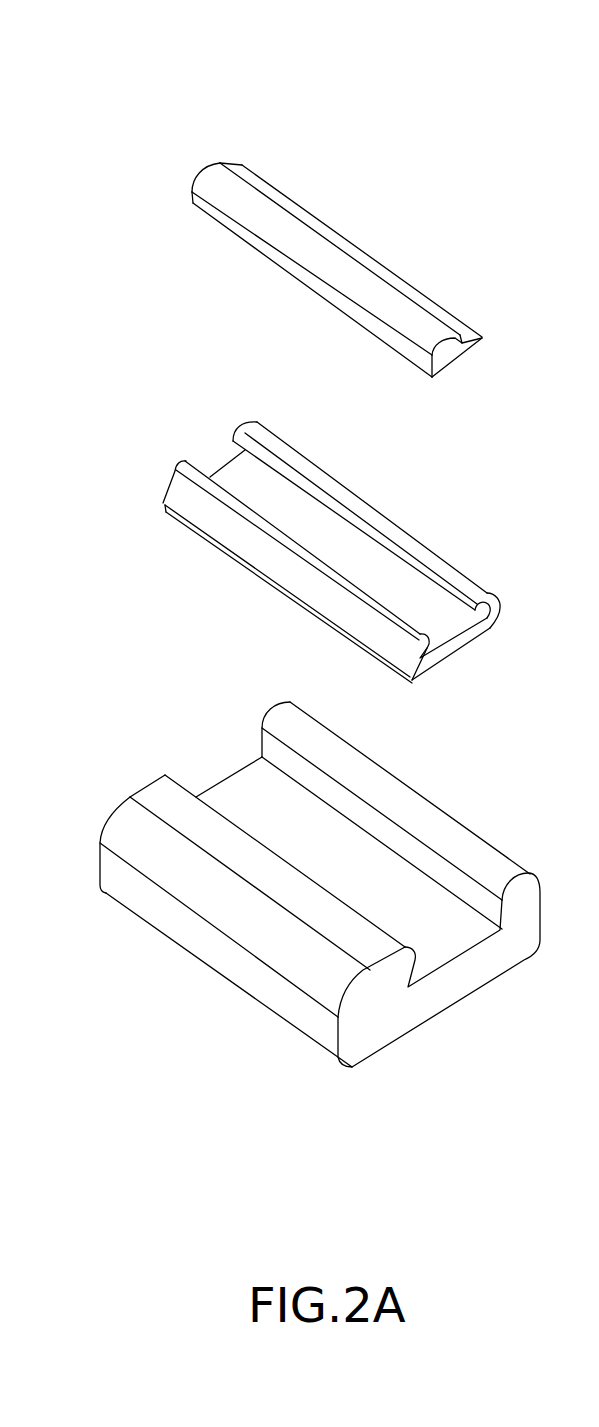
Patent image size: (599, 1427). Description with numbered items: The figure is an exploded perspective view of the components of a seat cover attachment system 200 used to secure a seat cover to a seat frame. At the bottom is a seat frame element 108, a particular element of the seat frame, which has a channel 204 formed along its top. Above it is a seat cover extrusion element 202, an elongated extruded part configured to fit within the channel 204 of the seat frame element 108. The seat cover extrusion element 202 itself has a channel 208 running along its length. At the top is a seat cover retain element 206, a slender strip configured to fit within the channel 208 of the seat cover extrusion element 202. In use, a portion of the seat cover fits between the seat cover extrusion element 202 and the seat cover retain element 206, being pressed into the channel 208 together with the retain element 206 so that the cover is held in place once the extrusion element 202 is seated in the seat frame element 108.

The seat cover attachment system 200 is at (157, 50).
The seat cover retain element 206 is at (212, 175).
The seat cover extrusion element 202 is at (177, 490).
The channel 208 is at (247, 481).
The seat frame element 108 is at (157, 793).
The channel 204 is at (248, 798).